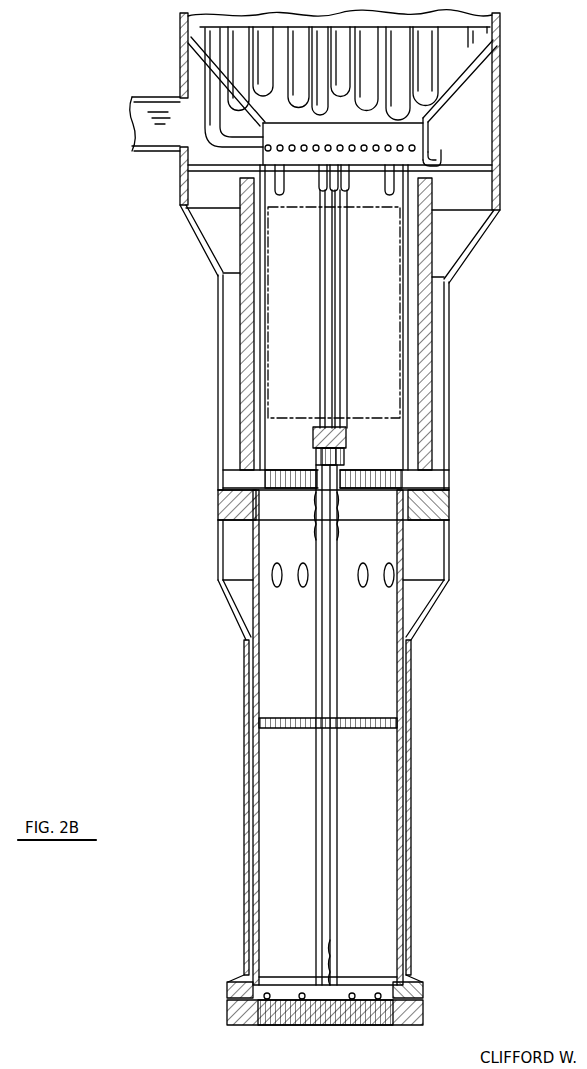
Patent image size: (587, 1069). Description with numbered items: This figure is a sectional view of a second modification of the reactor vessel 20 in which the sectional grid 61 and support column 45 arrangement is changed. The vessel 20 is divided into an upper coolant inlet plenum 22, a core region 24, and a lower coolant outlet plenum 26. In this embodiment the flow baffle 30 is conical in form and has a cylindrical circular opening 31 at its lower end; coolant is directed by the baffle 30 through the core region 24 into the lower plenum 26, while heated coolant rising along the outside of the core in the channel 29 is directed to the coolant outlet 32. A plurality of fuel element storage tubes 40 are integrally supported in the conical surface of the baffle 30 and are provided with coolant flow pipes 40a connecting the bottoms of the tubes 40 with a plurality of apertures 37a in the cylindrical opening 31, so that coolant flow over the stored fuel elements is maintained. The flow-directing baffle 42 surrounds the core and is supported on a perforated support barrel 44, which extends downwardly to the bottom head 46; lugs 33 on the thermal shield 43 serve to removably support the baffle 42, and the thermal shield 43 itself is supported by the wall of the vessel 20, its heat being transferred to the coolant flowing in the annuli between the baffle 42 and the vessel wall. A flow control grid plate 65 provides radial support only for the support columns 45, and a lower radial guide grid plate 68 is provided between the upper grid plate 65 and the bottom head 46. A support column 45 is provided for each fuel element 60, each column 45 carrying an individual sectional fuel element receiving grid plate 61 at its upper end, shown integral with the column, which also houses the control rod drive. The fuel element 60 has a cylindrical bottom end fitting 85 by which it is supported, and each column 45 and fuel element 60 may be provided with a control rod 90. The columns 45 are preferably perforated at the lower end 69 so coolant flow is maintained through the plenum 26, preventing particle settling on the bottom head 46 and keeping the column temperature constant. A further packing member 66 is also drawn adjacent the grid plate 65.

The reactor vessel 20 is at (450, 331).
The upper coolant inlet plenum 22 is at (462, 22).
The core region 24 is at (262, 344).
The lower coolant outlet plenum 26 is at (282, 772).
The channel 29 is at (222, 237).
The flow baffle 30 is at (443, 80).
The cylindrical circular opening 31 is at (426, 157).
The coolant outlet 32 is at (146, 131).
The lug 33 is at (432, 511).
The apertures 37a is at (335, 152).
The fuel element storage tubes 40 is at (316, 89).
The coolant flow pipes 40a is at (232, 148).
The core flow-directing baffle 42 is at (260, 409).
The thermal shield 43 is at (426, 386).
The perforated support barrel 44 is at (412, 607).
The support column 45 is at (337, 666).
The bottom head 46 is at (390, 1026).
The fuel element 60 is at (330, 283).
The sectional fuel element receiving grid plate 61 is at (318, 456).
The flow control grid plate 65 is at (272, 492).
The packing ring 66 is at (378, 492).
The lower radial guide grid plate 68 is at (351, 734).
The lower end 69 is at (335, 985).
The cylindrical bottom end fitting 85 is at (346, 433).
The control rod 90 is at (346, 455).